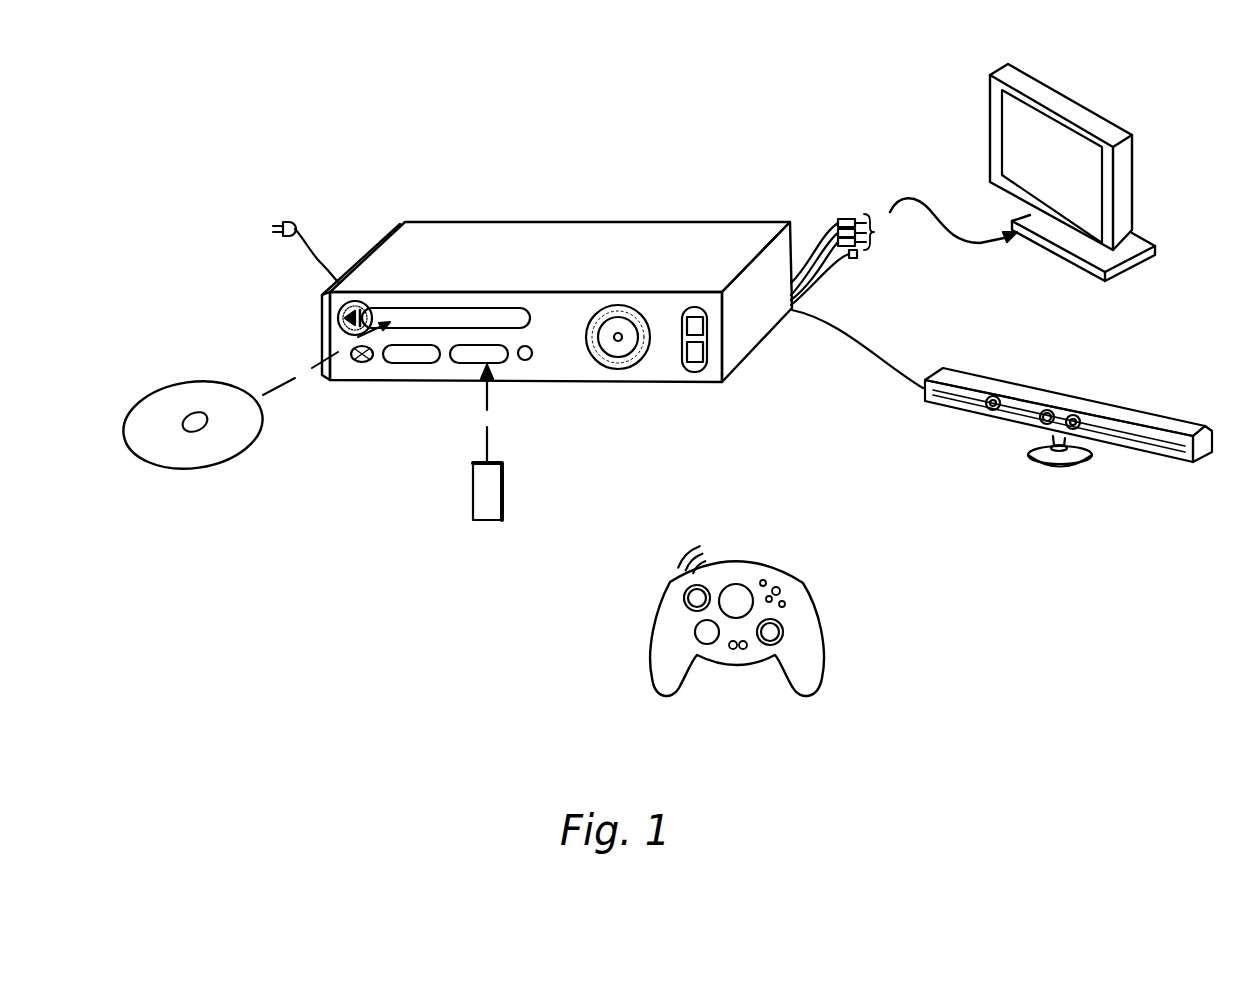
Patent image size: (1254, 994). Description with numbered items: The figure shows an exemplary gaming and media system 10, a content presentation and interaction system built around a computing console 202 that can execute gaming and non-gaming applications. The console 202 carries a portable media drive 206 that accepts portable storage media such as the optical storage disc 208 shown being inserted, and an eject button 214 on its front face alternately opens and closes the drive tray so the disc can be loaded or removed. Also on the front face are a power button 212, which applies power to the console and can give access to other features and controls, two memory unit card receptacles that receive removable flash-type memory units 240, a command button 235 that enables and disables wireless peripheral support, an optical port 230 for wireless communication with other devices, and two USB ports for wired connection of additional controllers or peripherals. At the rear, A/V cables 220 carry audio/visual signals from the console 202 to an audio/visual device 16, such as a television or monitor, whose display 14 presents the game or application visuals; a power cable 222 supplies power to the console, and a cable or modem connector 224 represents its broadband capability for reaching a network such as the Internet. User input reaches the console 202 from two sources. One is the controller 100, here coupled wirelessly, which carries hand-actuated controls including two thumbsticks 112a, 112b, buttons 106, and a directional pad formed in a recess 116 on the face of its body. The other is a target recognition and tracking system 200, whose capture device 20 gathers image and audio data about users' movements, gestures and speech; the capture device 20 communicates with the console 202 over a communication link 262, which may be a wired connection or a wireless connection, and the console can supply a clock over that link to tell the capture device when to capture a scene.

The gaming and media system 10 is at (499, 110).
The display 14 is at (1018, 129).
The audio/visual device 16 is at (990, 93).
The capture device 20 is at (1147, 410).
The controller 100 is at (660, 698).
The buttons 106 is at (780, 591).
The thumbstick 112a is at (684, 596).
The thumbstick 112b is at (783, 632).
The recess 116 is at (695, 631).
The target recognition and tracking system 200 is at (1000, 549).
The console 202 is at (437, 233).
The portable media drive 206 is at (458, 308).
The optical storage disc 208 is at (202, 466).
The power button 212 is at (620, 369).
The eject button 214 is at (345, 320).
The A/V cables 220 is at (842, 219).
The power cable 222 is at (283, 223).
The cable or modem connector 224 is at (856, 259).
The optical port 230 is at (358, 365).
The command button 235 is at (525, 361).
The memory unit 240 is at (488, 521).
The communication link 262 is at (886, 360).